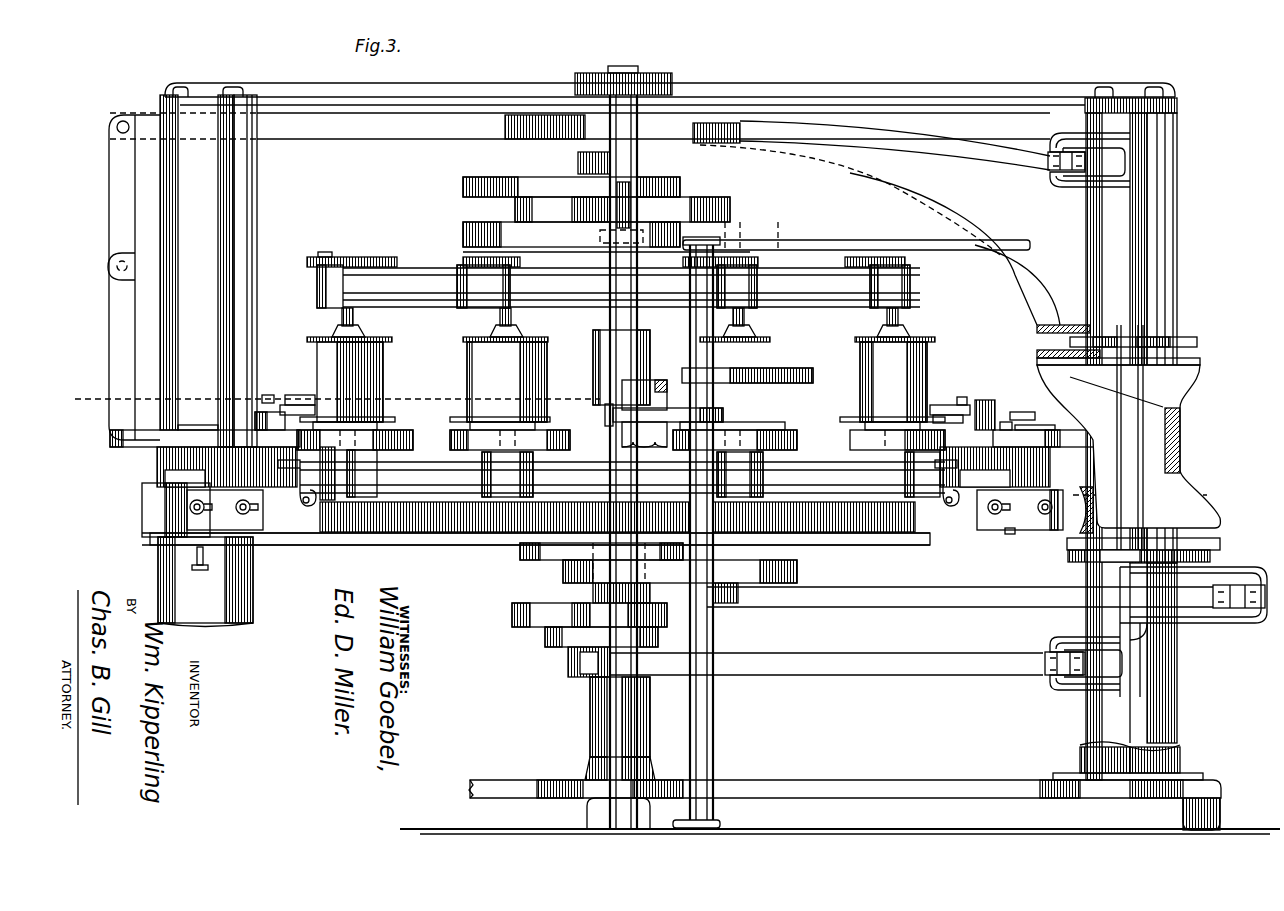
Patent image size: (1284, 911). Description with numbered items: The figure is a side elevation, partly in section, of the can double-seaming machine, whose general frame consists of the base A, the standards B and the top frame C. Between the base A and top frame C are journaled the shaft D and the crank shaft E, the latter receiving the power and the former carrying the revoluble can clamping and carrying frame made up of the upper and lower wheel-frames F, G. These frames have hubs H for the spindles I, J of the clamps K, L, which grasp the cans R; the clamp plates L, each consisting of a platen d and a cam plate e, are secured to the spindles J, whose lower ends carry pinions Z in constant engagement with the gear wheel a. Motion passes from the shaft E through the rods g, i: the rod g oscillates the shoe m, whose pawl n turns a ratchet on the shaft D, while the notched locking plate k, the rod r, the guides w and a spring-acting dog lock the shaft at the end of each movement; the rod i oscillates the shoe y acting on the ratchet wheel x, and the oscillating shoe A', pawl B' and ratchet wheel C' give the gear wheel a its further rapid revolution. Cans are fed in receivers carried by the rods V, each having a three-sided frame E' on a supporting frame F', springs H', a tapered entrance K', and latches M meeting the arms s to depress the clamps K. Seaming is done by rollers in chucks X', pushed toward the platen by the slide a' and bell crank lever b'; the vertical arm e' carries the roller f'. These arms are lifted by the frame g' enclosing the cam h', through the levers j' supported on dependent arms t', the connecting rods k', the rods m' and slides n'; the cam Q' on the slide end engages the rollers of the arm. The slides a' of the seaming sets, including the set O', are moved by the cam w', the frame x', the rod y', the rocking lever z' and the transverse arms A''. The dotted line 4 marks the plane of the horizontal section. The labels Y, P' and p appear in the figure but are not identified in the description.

The top frame C is at (671, 86).
The standards B is at (681, 419).
The rocking lever z' is at (134, 277).
The rod y' is at (580, 128).
The shaft D is at (618, 437).
The rods V is at (702, 532).
The rod g is at (935, 154).
The reciprocating frame g' is at (960, 362).
The shoe m is at (571, 174).
The rod r is at (615, 190).
The pawl n is at (607, 209).
The notched locking plate k is at (606, 237).
The guides w is at (614, 235).
The arm s is at (795, 245).
The latches M is at (944, 262).
The hubs H is at (615, 286).
The upper wheel-frame F is at (631, 287).
The spindles I is at (353, 318).
The clamps K is at (629, 328).
The can R is at (622, 376).
The bar Y is at (747, 365).
The three-sided vertical frame E' is at (650, 382).
The supporting frame F' is at (653, 418).
The clamp plates L is at (395, 436).
The platen d is at (377, 428).
The cam plate e is at (621, 429).
The lower wheel-frame G is at (622, 477).
The springs H' is at (695, 474).
The spindles J is at (340, 530).
The gear wheel a is at (540, 532).
The pinions Z is at (372, 530).
The slide a' is at (608, 428).
The bell crank lever b' is at (616, 425).
The tapered entrance K' is at (603, 467).
The rods m' is at (610, 555).
The slides n' is at (625, 509).
The vertical arm e' is at (629, 499).
The roller f' is at (624, 465).
The connecting rods k' is at (551, 550).
The chuck X' is at (625, 406).
The pawl P' is at (288, 389).
The cam Q' is at (950, 400).
The set of seaming mechanism O' is at (1023, 408).
The short transverse arms A'' is at (112, 452).
The centrally pivoted levers j' is at (1005, 547).
The dependent arms t' is at (1040, 528).
The section line 4 is at (646, 450).
The ratchet wheel C' is at (585, 559).
The oscillating shoe A' is at (680, 563).
The pawl B' is at (669, 581).
The ratchet wheel x is at (589, 615).
The shoe y is at (601, 652).
The base A is at (840, 797).
The rod i is at (866, 663).
The rod p is at (987, 632).
The cam h' is at (1139, 567).
The crank shaft E is at (1128, 437).
The frame x' is at (1125, 358).
The cam w' is at (1124, 361).